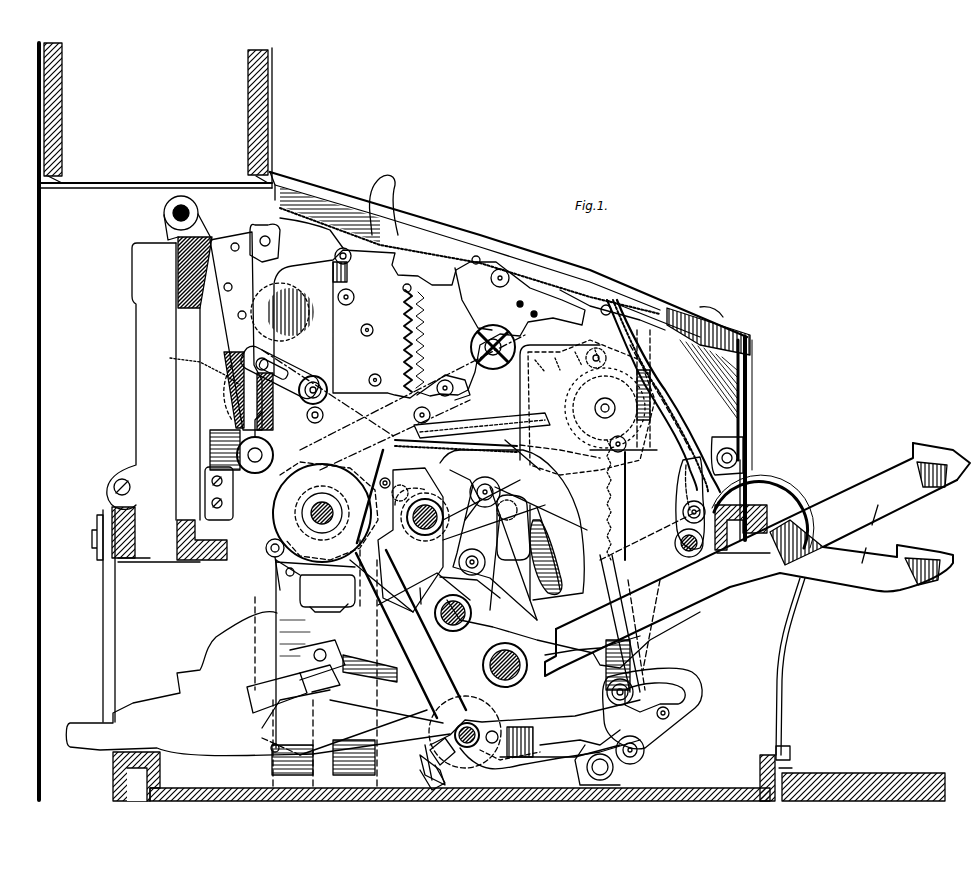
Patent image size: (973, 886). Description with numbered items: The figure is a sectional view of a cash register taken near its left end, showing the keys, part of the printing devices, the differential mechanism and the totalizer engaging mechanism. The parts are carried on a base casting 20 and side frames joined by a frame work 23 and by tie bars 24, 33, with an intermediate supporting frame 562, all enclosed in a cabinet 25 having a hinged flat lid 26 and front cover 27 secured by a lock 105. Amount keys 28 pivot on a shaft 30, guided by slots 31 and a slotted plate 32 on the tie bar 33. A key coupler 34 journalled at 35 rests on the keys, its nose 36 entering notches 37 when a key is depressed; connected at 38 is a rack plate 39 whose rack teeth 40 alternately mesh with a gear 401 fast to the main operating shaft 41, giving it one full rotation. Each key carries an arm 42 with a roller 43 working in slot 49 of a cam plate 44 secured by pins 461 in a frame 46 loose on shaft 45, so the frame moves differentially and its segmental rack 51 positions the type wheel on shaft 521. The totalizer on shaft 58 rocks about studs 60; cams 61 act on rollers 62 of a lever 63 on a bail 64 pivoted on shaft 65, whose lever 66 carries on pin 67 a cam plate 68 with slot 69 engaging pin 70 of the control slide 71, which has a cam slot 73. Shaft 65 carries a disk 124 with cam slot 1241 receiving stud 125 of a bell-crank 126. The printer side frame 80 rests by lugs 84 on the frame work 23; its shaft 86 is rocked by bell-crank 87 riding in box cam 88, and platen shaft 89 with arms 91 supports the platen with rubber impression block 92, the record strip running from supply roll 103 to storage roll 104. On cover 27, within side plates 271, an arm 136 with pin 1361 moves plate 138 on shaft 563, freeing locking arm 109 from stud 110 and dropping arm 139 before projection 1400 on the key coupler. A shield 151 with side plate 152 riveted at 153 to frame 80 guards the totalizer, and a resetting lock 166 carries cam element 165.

The base casting 20 is at (708, 788).
The frame work 23 is at (167, 401).
The tie bar 24 is at (770, 512).
The cabinet 25 is at (40, 533).
The flat lid 26 is at (722, 320).
The front cover 27 is at (748, 413).
The amount keys 28 is at (757, 559).
The shaft 30 is at (528, 666).
The slots 31 is at (812, 620).
The vertically slotted plate 32 is at (115, 625).
The tie bar 33 is at (125, 563).
The key coupler 34 is at (424, 589).
The key coupler journal 35 is at (450, 627).
The nose 36 is at (272, 725).
The notches 37 is at (250, 700).
The connection 38 is at (277, 614).
The rack plate 39 is at (348, 604).
The rack teeth 40 is at (325, 534).
The main operating shaft 41 is at (392, 483).
The arm 42 is at (488, 552).
The anti-friction roller 43 is at (545, 490).
The cam plates 44 is at (552, 548).
The transverse shaft 45 is at (447, 540).
The frame 46 is at (512, 525).
The slot 49 is at (548, 553).
The segmental rack 51 is at (456, 450).
The shaft 58 is at (655, 364).
The pivotal studs 60 is at (690, 412).
The complementary cams 61 is at (410, 496).
The rollers 62 is at (268, 552).
The lever 63 is at (411, 634).
The bail 64 is at (430, 780).
The shaft 65 is at (500, 720).
The lever 66 is at (566, 732).
The pin 67 is at (645, 750).
The cam plate 68 is at (680, 718).
The cam slot 69 is at (680, 685).
The pin 70 is at (607, 690).
The totalizer control slide 71 is at (635, 660).
The cam slot 73 is at (598, 380).
The printer side frame 80 is at (225, 376).
The lugs 84 is at (214, 247).
The shaft 86 is at (256, 440).
The bell-crank 87 is at (250, 338).
The box cam 88 is at (425, 529).
The platen supporting shaft 89 is at (522, 292).
The arms 91 is at (572, 296).
The rubber impression block 92 is at (598, 302).
The supply roll 103 is at (193, 385).
The storage roll 104 is at (417, 286).
The lock 105 is at (752, 380).
The locking arm 109 is at (616, 488).
The stud 110 is at (441, 343).
The disk 124 is at (465, 717).
The stud 125 is at (420, 768).
The bell-crank 126 is at (645, 645).
The arm 136 is at (680, 478).
The plate 138 is at (672, 508).
The arm 139 is at (512, 552).
The shield 151 is at (588, 407).
The side plate 152 is at (482, 425).
The rivet 153 is at (442, 399).
The cam element 165 is at (594, 366).
The resetting lock 166 is at (674, 383).
The side plates 271 is at (708, 379).
The gear 401 is at (260, 505).
The pins 461 is at (493, 470).
The shaft 521 is at (535, 340).
The supporting frame 562 is at (552, 456).
The shaft 563 is at (712, 597).
The cam slot 1241 is at (428, 748).
The pin 1361 is at (706, 520).
The projection 1400 is at (573, 634).